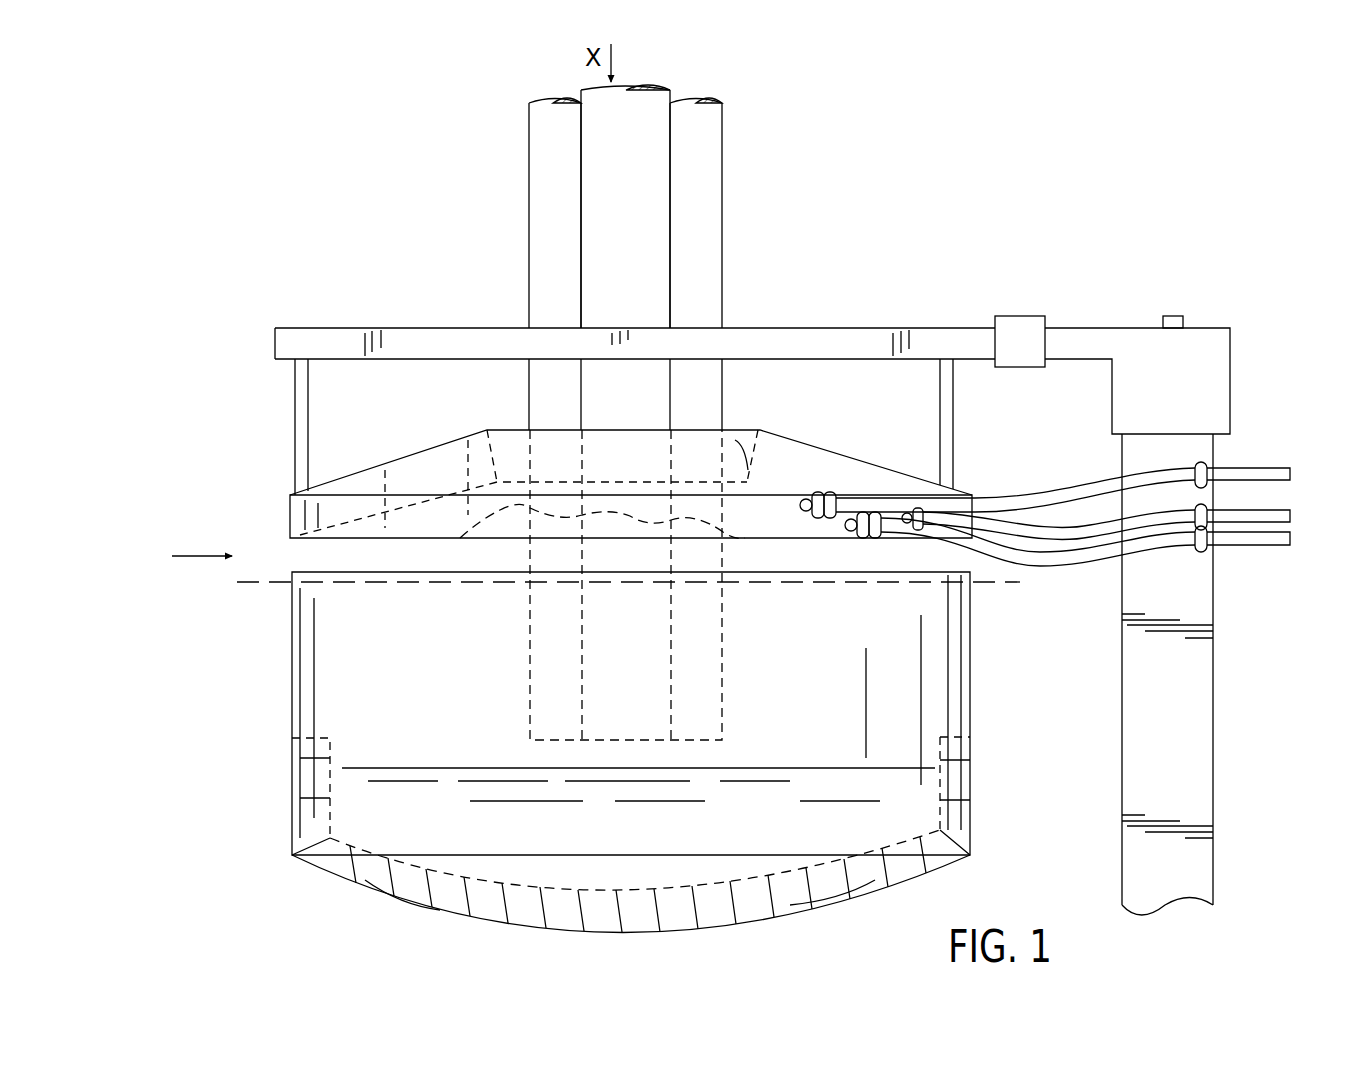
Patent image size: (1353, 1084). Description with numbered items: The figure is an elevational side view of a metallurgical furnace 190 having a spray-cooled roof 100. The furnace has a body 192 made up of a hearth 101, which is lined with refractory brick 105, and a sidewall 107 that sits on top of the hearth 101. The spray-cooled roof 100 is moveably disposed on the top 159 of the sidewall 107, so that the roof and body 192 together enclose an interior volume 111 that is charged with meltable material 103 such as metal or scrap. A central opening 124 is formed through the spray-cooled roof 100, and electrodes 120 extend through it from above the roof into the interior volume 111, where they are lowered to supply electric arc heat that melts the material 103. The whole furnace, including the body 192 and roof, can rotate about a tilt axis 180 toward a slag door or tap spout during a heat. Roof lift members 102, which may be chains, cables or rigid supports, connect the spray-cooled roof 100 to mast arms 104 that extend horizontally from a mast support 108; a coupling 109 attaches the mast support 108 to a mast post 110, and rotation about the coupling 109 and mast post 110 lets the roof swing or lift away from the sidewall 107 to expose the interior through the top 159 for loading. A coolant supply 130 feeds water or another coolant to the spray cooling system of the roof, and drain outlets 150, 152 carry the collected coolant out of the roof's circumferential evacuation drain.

The spray-cooled roof 100 is at (367, 466).
The hearth 101 is at (966, 752).
The roof lift members 102 is at (295, 418).
The material 103 is at (661, 840).
The mast arms 104 is at (818, 340).
The refractory brick 105 is at (515, 920).
The sidewall 107 is at (290, 712).
The mast support 108 is at (1097, 326).
The coupling 109 is at (1176, 313).
The mast post 110 is at (1207, 800).
The interior volume 111 is at (930, 710).
The electrodes 120 is at (516, 130).
The central opening 124 is at (730, 447).
The coolant supply 130 is at (820, 500).
The outlet 150 is at (852, 537).
The outlet 152 is at (912, 510).
The top 159 is at (300, 556).
The tilt axis 180 is at (462, 585).
The metallurgical furnace 190 is at (206, 656).
The body 192 is at (975, 826).